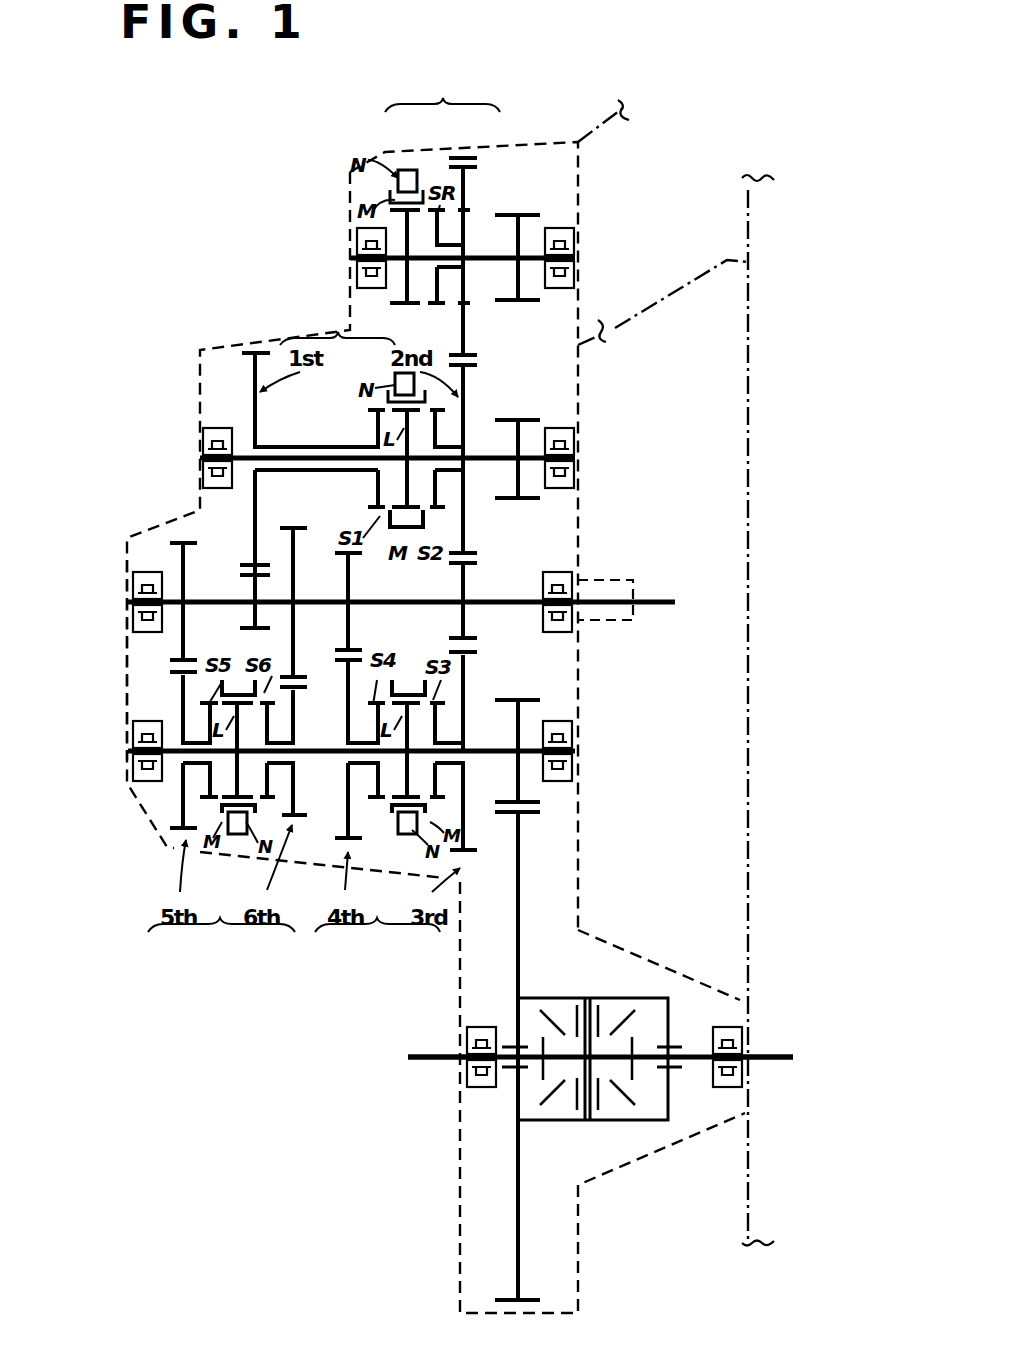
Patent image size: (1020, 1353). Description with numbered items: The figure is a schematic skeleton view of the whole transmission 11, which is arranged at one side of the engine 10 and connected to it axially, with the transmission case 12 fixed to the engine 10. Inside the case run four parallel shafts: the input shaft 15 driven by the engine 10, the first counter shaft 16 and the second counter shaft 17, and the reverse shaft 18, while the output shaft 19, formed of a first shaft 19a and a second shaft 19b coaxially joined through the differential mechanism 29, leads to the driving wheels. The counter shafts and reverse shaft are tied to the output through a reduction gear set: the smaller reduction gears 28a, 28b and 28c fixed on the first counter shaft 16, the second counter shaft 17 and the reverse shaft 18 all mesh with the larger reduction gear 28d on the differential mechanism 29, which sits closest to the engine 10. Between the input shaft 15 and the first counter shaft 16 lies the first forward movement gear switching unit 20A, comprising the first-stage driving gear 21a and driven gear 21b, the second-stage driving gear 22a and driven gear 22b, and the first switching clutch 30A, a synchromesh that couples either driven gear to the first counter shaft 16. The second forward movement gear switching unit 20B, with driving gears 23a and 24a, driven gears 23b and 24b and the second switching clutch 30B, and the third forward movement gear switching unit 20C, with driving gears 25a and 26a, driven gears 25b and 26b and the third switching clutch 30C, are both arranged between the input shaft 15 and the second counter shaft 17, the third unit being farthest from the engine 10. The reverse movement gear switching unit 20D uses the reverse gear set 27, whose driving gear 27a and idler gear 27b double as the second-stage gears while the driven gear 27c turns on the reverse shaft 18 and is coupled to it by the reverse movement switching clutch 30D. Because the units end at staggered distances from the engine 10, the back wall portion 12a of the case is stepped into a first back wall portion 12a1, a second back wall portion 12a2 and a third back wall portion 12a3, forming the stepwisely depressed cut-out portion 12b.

The engine 10 is at (745, 195).
The transmission 11 is at (207, 1036).
The transmission case 12 is at (522, 140).
The back wall portion 12a is at (128, 600).
The first back wall portion 12a1 is at (127, 672).
The second back wall portion 12a2 is at (203, 480).
The third back wall portion 12a3 is at (350, 238).
The stepwisely depressed cut-out portion 12b is at (160, 312).
The input shaft 15 is at (649, 598).
The first counter shaft 16 is at (466, 443).
The second counter shaft 17 is at (484, 760).
The reverse shaft 18 is at (506, 270).
The output shaft 19 is at (758, 1053).
The first shaft 19a is at (428, 1062).
The second shaft 19b is at (757, 1063).
The first forward movement gear switching unit 20A is at (337, 328).
The second forward movement gear switching unit 20B is at (396, 863).
The third forward movement gear switching unit 20C is at (227, 863).
The reverse movement gear switching unit 20D is at (442, 95).
The driving gear of 1st shift stage gear set 21a is at (252, 583).
The driven gear of 1st shift stage gear set 21b is at (258, 418).
The driving gear of 2nd shift stage gear set 22a is at (466, 631).
The driven gear of 2nd shift stage gear set 22b is at (466, 505).
The driving gear of 3rd shift stage gear set 23a is at (493, 649).
The driven gear of 3rd shift stage gear set 23b is at (488, 733).
The driving gear of 4th shift stage gear set 24a is at (352, 578).
The driven gear of 4th shift stage gear set 24b is at (345, 660).
The driving gear of 5th shift stage gear set 25a is at (183, 655).
The driven gear of 5th shift stage gear set 25b is at (183, 683).
The driving gear of 6th shift stage gear set 26a is at (294, 536).
The driven gear of 6th shift stage gear set 26b is at (295, 707).
The reverse gear set 27 is at (465, 212).
The driving gear of reverse gear set 27a is at (483, 699).
The idler gear of reverse gear set 27b is at (490, 564).
The driven gear of reverse gear set 27c is at (466, 313).
The reduction gear 28a is at (525, 420).
The reduction gear 28b is at (522, 800).
The reduction gear 28c is at (525, 216).
The larger reduction gear 28d is at (522, 922).
The differential mechanism 29 is at (568, 1125).
The first switching clutch 30A is at (373, 484).
The second switching clutch 30B is at (403, 834).
The third switching clutch 30C is at (239, 836).
The reverse movement switching clutch 30D is at (406, 167).